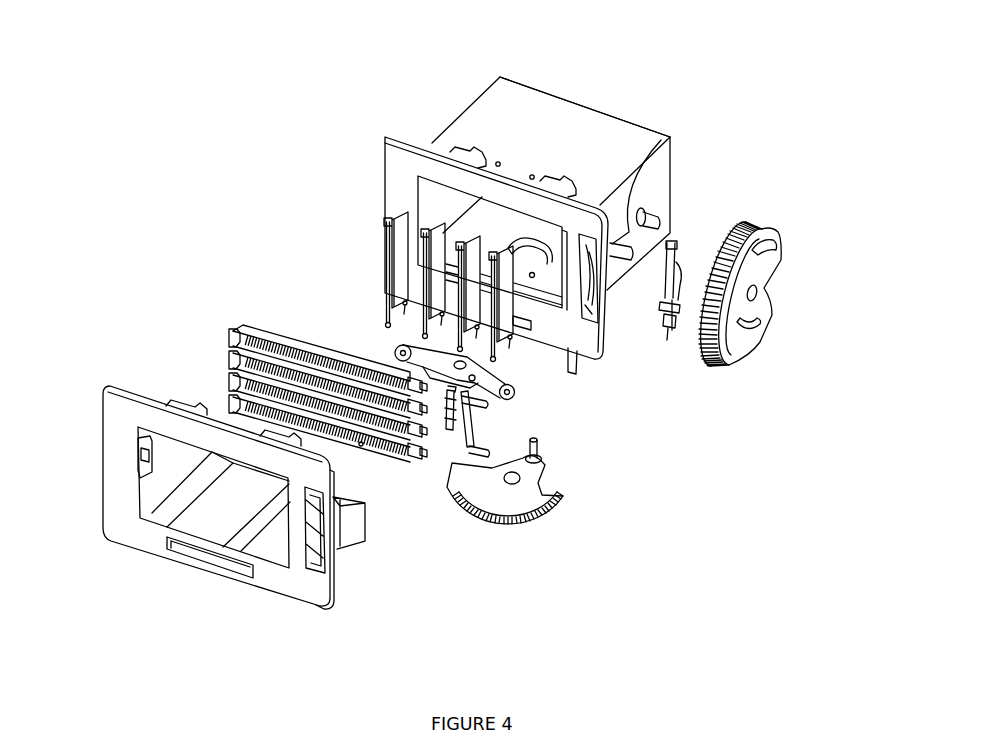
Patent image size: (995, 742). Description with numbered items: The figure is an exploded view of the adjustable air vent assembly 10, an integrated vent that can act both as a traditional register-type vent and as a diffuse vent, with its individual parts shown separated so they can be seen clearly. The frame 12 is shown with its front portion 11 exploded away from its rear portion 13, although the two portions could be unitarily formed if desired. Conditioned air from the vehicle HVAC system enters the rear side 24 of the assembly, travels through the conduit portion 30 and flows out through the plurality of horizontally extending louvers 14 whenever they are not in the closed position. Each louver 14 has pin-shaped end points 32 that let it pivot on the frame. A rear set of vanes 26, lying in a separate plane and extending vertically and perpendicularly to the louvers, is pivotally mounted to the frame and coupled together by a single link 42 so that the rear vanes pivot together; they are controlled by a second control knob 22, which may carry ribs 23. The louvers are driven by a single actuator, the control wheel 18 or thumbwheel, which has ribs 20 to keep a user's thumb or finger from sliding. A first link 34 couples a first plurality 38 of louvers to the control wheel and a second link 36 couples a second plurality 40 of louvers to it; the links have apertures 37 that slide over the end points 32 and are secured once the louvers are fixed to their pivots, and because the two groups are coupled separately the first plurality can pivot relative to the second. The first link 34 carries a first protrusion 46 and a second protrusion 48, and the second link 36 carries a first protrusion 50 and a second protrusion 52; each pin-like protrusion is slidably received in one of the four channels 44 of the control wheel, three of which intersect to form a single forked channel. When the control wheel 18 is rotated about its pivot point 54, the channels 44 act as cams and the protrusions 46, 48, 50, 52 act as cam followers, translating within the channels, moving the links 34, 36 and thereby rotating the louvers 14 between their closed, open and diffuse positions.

The adjustable air vent assembly 10 is at (226, 139).
The front portion of frame 11 is at (118, 432).
The frame 12 is at (367, 190).
The rear portion of frame 13 is at (393, 178).
The louvers 14 is at (207, 351).
The control wheel 18 is at (730, 350).
The ribs 20 is at (700, 348).
The control knob 22 is at (537, 497).
The ribs 23 is at (523, 527).
The rear side 24 is at (592, 107).
The rear vanes 26 is at (403, 250).
The conduit portion 30 is at (490, 113).
The end points 32 is at (233, 368).
The first link 34 is at (465, 421).
The second link 36 is at (690, 305).
The apertures 37 is at (660, 304).
The first plurality of louvers 38 is at (262, 335).
The second plurality of louvers 40 is at (361, 446).
The link 42 is at (418, 368).
The channels 44 is at (766, 222).
The first protrusion 46 is at (487, 404).
The second protrusion 48 is at (490, 453).
The first protrusion 50 is at (680, 262).
The second protrusion 52 is at (680, 317).
The pivot point 54 is at (656, 215).